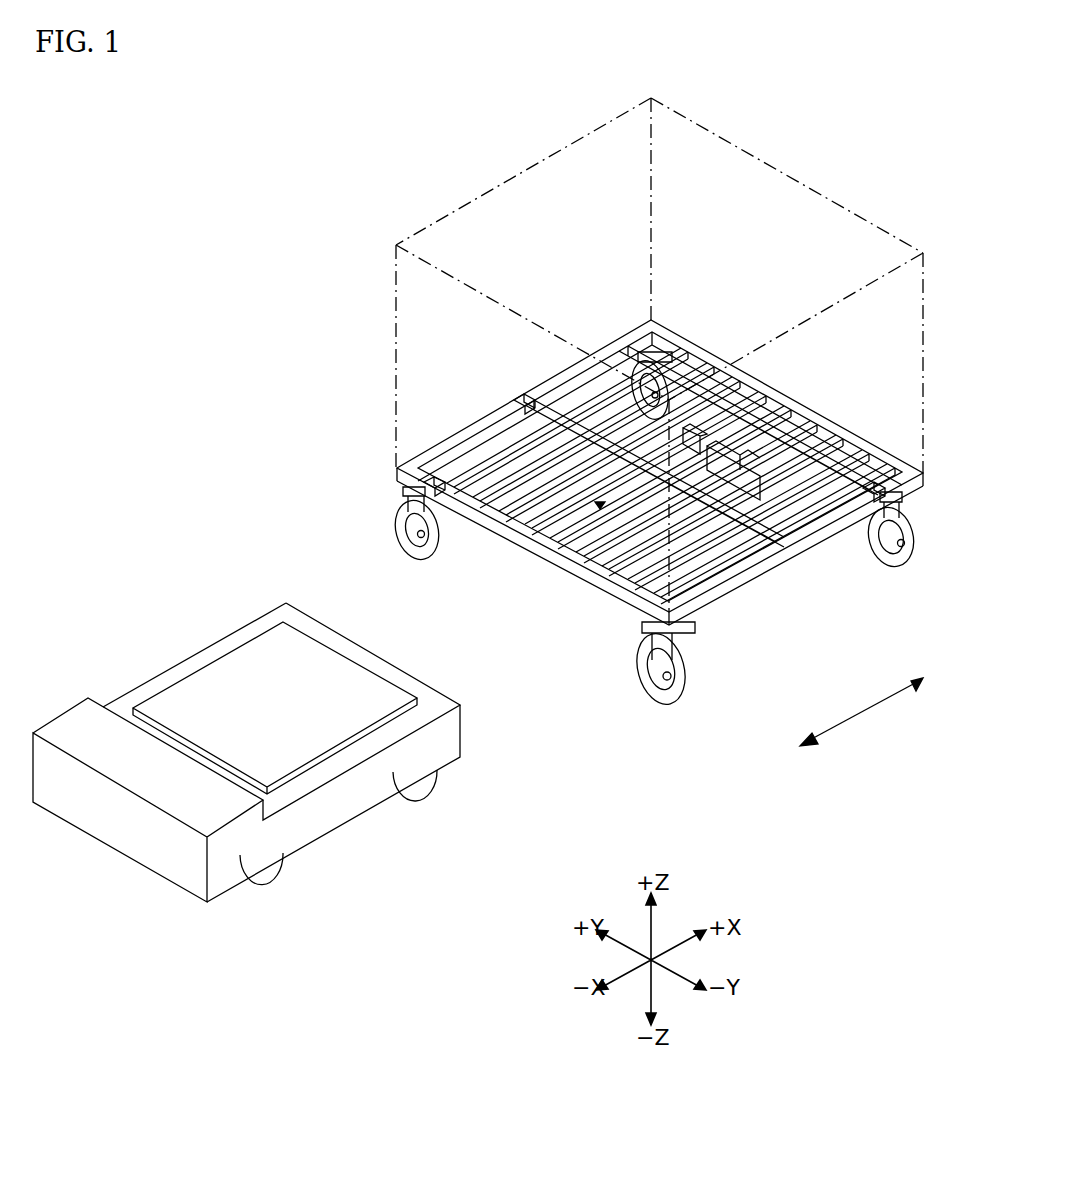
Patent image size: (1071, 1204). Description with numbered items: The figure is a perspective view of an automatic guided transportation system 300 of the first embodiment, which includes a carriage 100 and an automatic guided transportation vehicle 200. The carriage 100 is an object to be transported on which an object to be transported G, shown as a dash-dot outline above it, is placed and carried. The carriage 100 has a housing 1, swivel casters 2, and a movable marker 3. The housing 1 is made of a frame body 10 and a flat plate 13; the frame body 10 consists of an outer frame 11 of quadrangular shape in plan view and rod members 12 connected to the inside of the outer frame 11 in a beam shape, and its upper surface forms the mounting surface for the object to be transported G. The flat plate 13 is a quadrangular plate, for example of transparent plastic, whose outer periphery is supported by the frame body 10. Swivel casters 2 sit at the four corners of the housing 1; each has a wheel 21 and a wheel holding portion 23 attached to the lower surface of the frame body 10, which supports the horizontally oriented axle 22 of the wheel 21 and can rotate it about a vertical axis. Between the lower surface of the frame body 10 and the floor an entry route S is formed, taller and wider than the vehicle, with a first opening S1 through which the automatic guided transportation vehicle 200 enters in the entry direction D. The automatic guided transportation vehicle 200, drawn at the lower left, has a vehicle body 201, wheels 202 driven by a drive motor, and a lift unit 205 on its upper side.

The automatic guided transportation system 300 is at (299, 242).
The carriage 100 is at (378, 385).
The housing 1 is at (660, 472).
The frame body 10 is at (660, 472).
The outer frame 11 is at (830, 542).
The rod member 12 is at (515, 480).
The flat plate 13 is at (862, 480).
The swivel caster 2 is at (630, 571).
The wheel 21 is at (653, 690).
The axle 22 is at (696, 703).
The wheel holding portion 23 is at (686, 645).
The movable marker 3 is at (735, 422).
The entry route S is at (600, 500).
The object to be transported G is at (925, 268).
The automatic guided transportation vehicle 200 is at (291, 752).
The vehicle body 201 is at (432, 740).
The wheels 202 is at (420, 790).
The lift unit 205 is at (378, 697).
The first opening S1 is at (538, 610).
The entry direction D is at (861, 712).